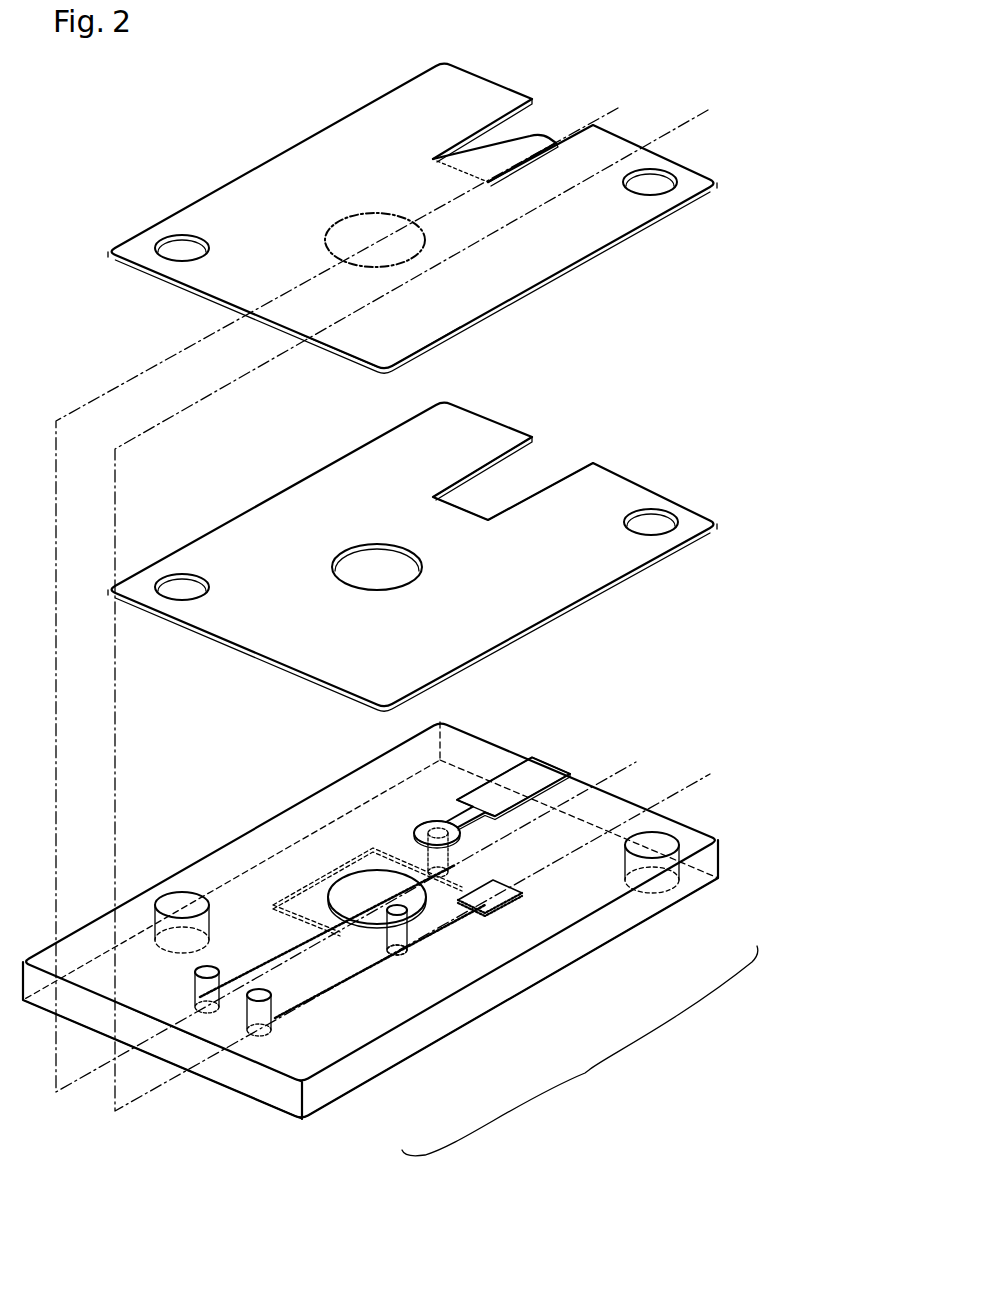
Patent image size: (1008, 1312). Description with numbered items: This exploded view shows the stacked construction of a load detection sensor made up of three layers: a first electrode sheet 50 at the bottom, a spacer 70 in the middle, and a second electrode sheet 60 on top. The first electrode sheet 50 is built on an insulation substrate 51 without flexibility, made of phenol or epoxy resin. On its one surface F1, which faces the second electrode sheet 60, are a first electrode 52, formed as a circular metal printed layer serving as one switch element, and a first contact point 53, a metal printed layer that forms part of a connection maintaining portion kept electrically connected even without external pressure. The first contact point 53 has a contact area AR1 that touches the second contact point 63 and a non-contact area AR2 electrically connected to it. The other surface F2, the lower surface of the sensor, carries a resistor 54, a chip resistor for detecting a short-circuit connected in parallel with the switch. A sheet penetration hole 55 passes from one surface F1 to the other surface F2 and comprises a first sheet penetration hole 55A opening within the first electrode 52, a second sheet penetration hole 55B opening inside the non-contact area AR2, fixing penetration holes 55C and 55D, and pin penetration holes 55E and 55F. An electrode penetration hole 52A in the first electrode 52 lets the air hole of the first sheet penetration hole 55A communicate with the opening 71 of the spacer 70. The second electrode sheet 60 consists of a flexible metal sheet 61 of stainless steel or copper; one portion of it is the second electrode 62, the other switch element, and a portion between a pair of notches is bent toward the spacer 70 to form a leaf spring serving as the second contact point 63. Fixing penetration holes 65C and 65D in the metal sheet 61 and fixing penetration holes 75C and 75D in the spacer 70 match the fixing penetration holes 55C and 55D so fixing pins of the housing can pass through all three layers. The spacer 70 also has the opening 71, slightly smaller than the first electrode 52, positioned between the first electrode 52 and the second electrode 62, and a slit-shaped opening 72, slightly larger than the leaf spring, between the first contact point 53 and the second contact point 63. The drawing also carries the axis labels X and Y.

The first electrode sheet 50 is at (746, 848).
The insulation substrate 51 is at (213, 1077).
The first electrode 52 is at (357, 882).
The electrode penetration hole 52A is at (393, 895).
The first contact point 53 is at (512, 679).
The resistor 54 is at (512, 907).
The sheet penetration hole 55 is at (580, 1051).
The first sheet penetration hole 55A is at (407, 952).
The second sheet penetration hole 55B is at (448, 874).
The fixing penetration hole 55C is at (660, 887).
The fixing penetration hole 55D is at (209, 935).
The pin penetration hole 55E is at (219, 985).
The pin penetration hole 55F is at (271, 993).
The second electrode sheet 60 is at (748, 168).
The metal sheet 61 is at (345, 339).
The second electrode 62 is at (350, 218).
The second contact point 63 is at (490, 155).
The fixing penetration hole 65C is at (648, 197).
The fixing penetration hole 65D is at (168, 262).
The spacer 70 is at (746, 508).
The opening 71 is at (365, 543).
The slit-shaped opening 72 is at (542, 462).
The fixing penetration hole 75C is at (651, 535).
The fixing penetration hole 75D is at (178, 600).
The contact area AR1 is at (528, 771).
The non-contact area AR2 is at (440, 828).
The one surface F1 is at (213, 1026).
The other surface F2 is at (277, 1122).
The X axis X is at (726, 432).
The Y axis Y is at (638, 432).